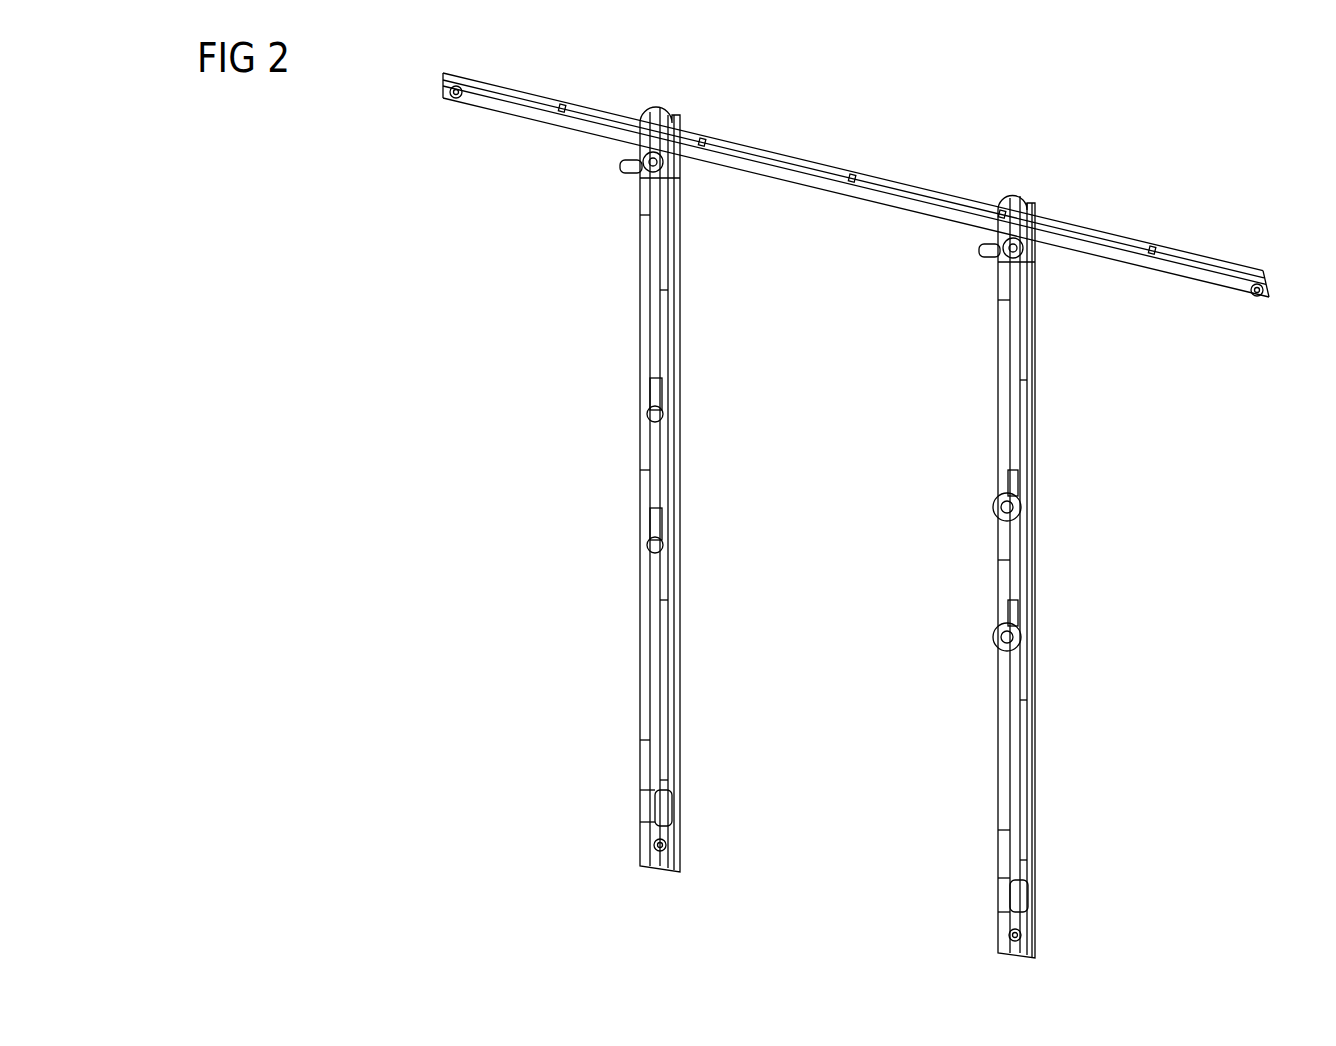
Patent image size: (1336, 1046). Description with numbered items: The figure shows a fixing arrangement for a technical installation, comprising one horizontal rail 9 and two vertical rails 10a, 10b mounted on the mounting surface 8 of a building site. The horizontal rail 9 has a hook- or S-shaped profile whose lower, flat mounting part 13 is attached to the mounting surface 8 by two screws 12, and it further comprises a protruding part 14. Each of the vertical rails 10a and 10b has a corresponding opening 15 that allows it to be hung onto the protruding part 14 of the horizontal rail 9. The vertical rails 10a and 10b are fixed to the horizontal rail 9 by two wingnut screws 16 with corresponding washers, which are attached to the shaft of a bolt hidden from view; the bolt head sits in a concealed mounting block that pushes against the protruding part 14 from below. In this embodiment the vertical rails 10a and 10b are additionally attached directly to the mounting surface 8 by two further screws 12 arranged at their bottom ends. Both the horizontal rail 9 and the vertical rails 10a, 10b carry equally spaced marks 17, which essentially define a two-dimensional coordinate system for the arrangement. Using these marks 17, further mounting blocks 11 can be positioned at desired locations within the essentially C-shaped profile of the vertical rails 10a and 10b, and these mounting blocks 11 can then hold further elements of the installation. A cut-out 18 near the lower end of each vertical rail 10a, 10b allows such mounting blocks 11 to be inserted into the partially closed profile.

The mounting surface 8 is at (838, 547).
The horizontal rail 9 is at (573, 133).
The vertical rail 10a is at (640, 638).
The vertical rail 10b is at (997, 730).
The mounting block 11 is at (618, 190).
The screw 12 is at (440, 118).
The flat mounting part 13 is at (925, 215).
The protruding part 14 is at (822, 170).
The opening 15 is at (685, 178).
The wingnut screw 16 is at (627, 161).
The mark 17 is at (697, 620).
The cut-out 18 is at (697, 805).